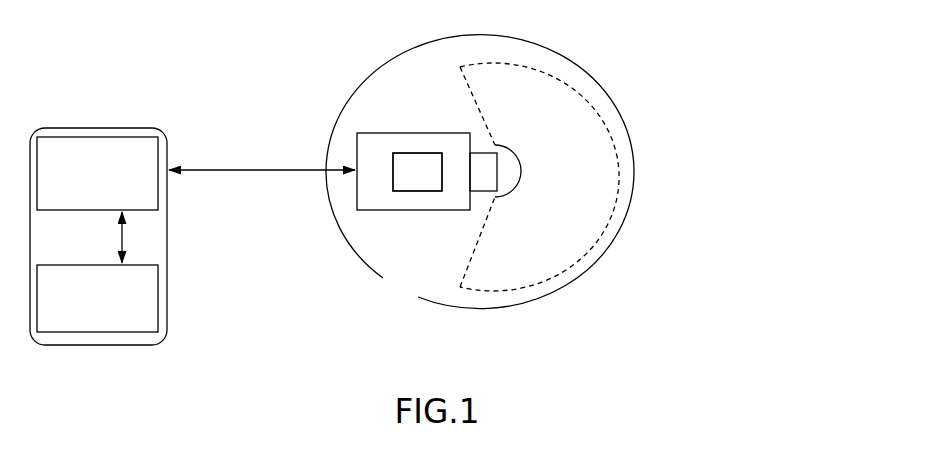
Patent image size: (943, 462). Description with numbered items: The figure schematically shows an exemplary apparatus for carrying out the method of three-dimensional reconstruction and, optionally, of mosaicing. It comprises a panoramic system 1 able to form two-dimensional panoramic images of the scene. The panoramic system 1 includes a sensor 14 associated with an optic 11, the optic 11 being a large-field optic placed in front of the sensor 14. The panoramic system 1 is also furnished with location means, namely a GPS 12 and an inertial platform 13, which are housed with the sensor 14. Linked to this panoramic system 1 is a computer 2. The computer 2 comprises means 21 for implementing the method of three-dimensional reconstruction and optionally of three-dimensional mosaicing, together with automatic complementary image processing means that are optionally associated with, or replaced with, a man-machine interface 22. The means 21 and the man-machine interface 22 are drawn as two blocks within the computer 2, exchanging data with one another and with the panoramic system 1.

The panoramic system 1 is at (607, 257).
The computer 2 is at (100, 347).
The optic 11 is at (519, 161).
The GPS 12 is at (399, 176).
The inertial platform 13 is at (319, 227).
The sensor 14 is at (401, 132).
The means for implementing the method of 3D reconstruction 21 is at (152, 155).
The man-machine interface 22 is at (148, 313).